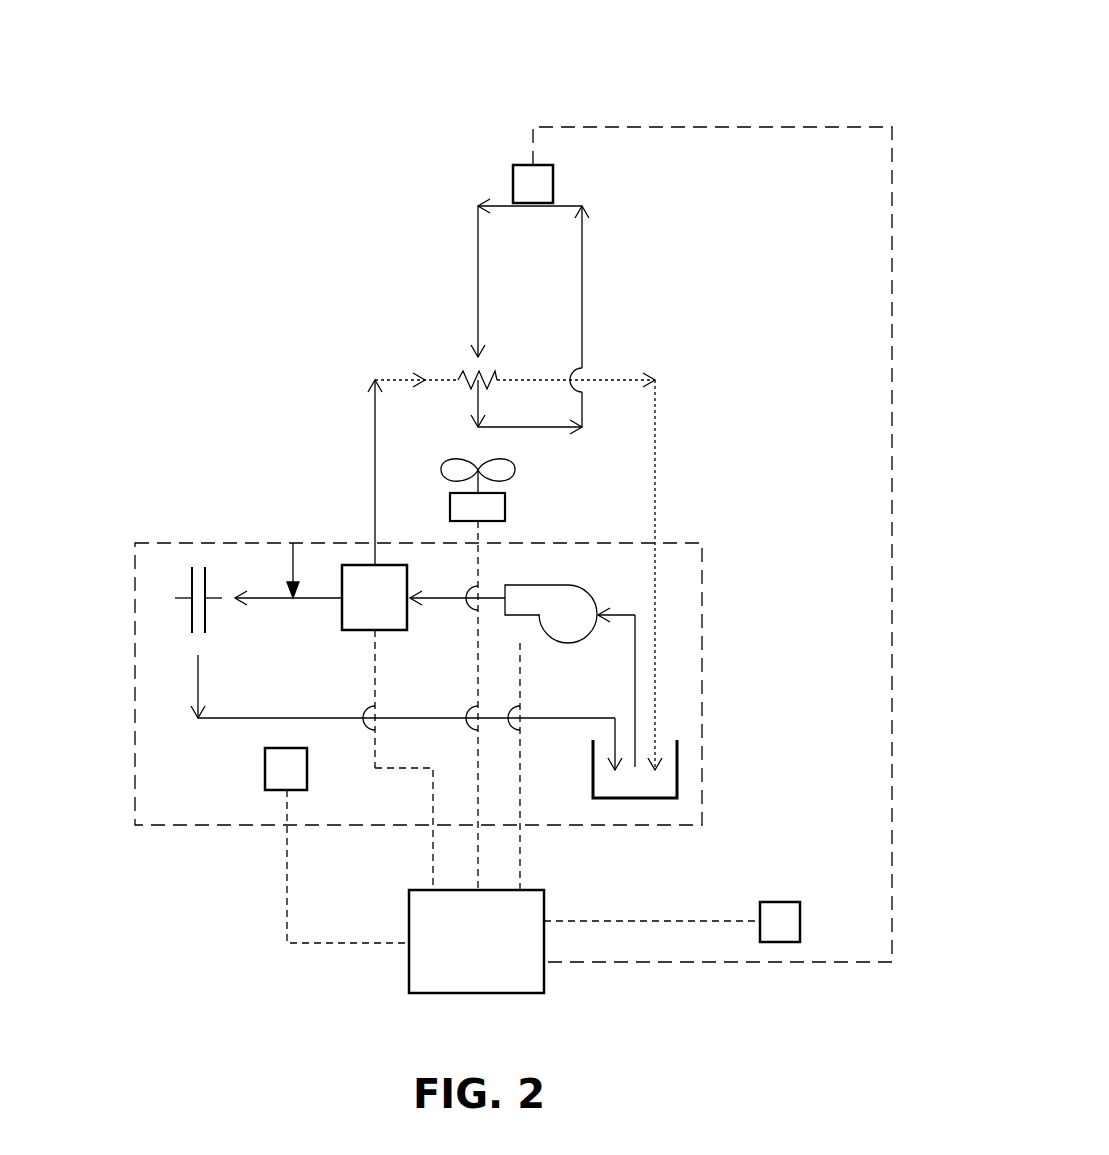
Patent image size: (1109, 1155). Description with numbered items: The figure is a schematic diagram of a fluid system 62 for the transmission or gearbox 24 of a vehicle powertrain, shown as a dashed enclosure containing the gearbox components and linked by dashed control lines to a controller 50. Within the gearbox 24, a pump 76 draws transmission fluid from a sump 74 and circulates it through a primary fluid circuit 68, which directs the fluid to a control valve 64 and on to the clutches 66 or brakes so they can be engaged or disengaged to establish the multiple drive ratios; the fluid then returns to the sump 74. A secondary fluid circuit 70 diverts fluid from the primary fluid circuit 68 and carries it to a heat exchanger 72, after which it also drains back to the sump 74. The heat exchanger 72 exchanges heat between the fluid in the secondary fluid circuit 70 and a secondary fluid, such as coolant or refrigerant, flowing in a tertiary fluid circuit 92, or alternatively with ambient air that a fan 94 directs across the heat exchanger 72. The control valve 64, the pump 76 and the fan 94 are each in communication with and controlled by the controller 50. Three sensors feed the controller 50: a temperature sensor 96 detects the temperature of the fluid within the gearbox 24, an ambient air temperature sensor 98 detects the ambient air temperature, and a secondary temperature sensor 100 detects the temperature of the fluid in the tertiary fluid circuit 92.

The transmission or gearbox 24 is at (120, 683).
The controller 50 is at (544, 906).
The fluid system 62 is at (770, 82).
The control valve 64 is at (358, 565).
The clutches 66 is at (192, 580).
The primary fluid circuit 68 is at (293, 545).
The secondary fluid circuit 70 is at (672, 440).
The heat exchanger 72 is at (458, 378).
The sump 74 is at (677, 768).
The pump 76 is at (537, 585).
The tertiary fluid circuit 92 is at (582, 290).
The fan 94 is at (450, 510).
The temperature sensor 96 is at (265, 780).
The ambient air temperature sensor 98 is at (800, 922).
The secondary temperature sensor 100 is at (513, 185).